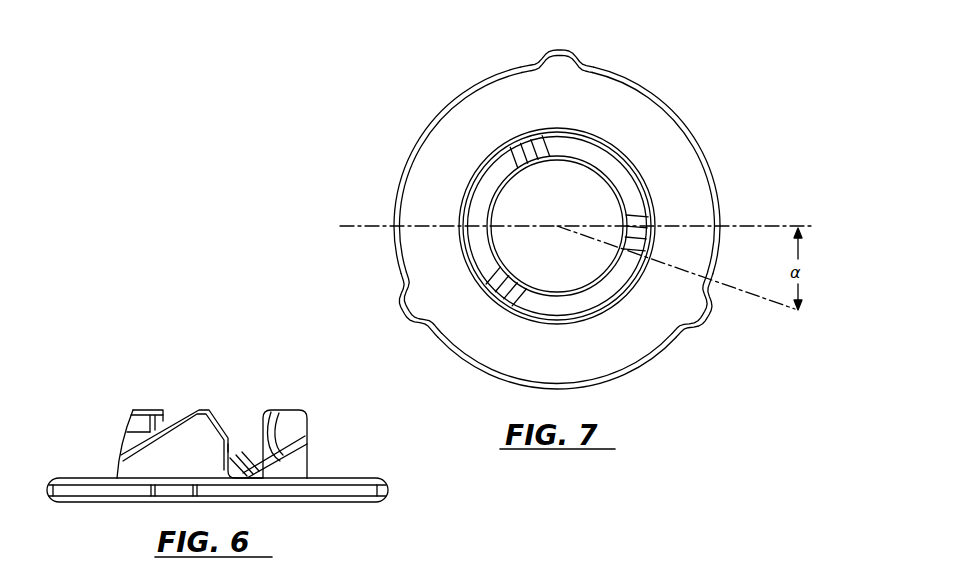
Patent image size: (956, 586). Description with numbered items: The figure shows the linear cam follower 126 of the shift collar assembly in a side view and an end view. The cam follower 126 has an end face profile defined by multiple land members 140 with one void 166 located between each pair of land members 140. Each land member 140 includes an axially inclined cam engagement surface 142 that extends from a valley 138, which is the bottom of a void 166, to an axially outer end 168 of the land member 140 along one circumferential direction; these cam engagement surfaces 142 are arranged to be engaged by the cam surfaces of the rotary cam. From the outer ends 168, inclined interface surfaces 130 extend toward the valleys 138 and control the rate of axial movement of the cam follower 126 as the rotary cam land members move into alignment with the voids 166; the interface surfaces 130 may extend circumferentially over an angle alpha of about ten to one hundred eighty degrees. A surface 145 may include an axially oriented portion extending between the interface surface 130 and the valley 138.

In FIG. 7, the cam follower 126 is at (716, 88).
In FIG. 6, the cam follower 126 is at (166, 317).
In FIG. 7, the interface surface 130 is at (528, 157).
In FIG. 6, the interface surface 130 is at (225, 424).
In FIG. 7, the valley 138 is at (506, 176).
In FIG. 6, the valley 138 is at (240, 466).
In FIG. 7, the land member 140 is at (546, 130).
In FIG. 6, the land member 140 is at (177, 458).
In FIG. 7, the cam engagement surface 142 is at (606, 150).
In FIG. 6, the cam engagement surface 142 is at (184, 416).
In FIG. 6, the surface 145 is at (229, 447).
In FIG. 6, the void 166 is at (252, 453).
In FIG. 6, the axially outer end 168 is at (147, 409).